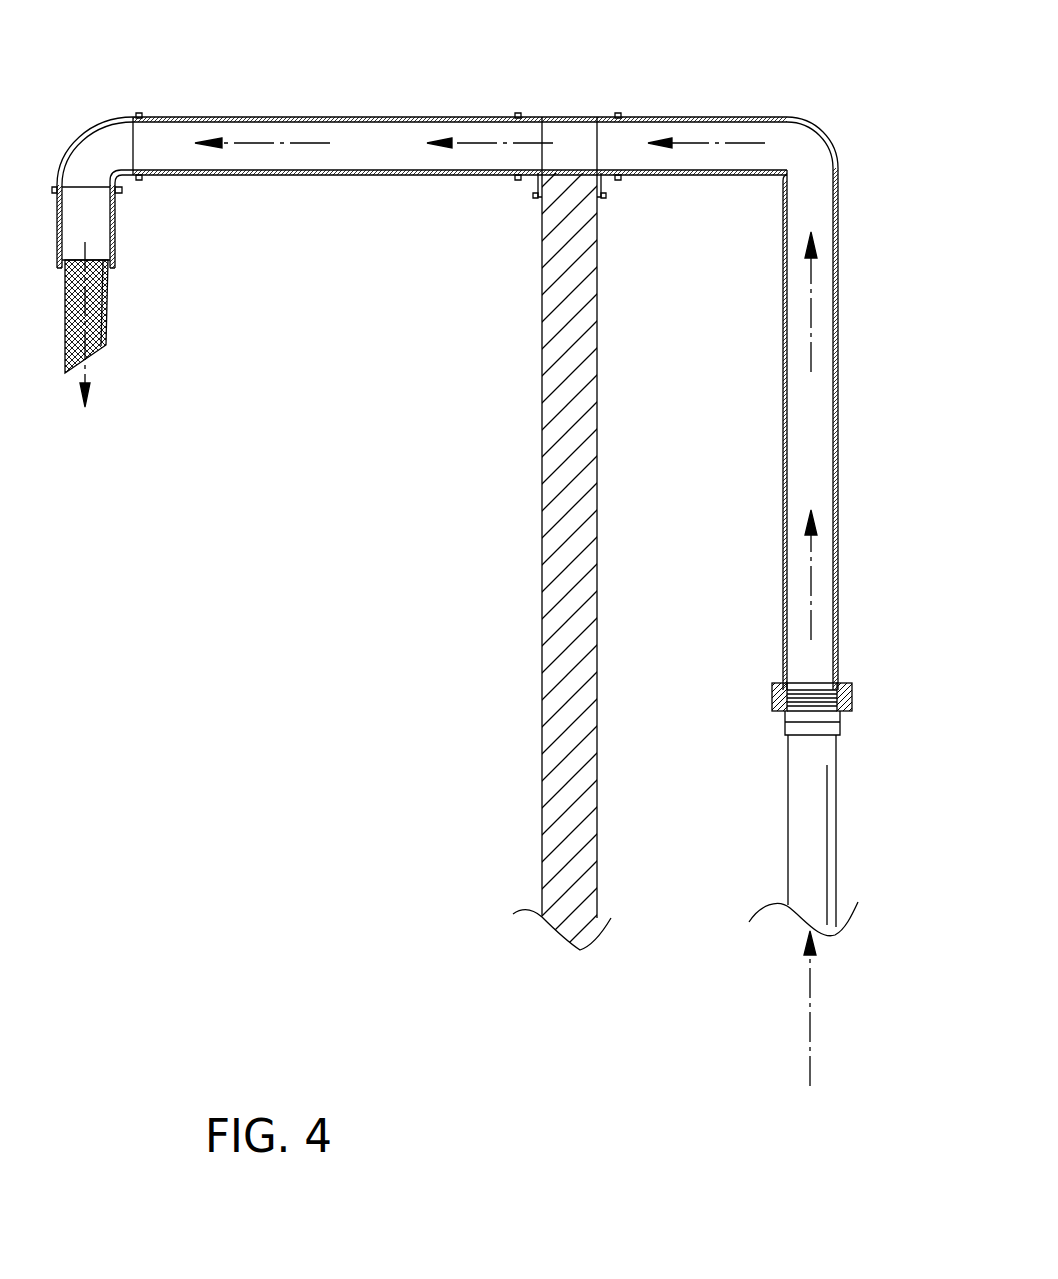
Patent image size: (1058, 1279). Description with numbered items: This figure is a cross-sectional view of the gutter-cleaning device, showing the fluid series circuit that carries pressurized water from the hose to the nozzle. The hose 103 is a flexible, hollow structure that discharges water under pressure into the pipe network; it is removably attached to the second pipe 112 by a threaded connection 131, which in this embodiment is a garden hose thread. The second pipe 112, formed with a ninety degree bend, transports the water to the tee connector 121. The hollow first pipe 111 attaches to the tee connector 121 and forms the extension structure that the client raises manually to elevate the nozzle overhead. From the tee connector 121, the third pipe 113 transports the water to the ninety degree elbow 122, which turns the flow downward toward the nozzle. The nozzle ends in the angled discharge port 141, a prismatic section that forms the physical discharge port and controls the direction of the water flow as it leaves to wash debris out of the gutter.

The hose 103 is at (808, 840).
The first pipe 111 is at (580, 548).
The second pipe 112 is at (811, 372).
The third pipe 113 is at (358, 142).
The tee connector 121 is at (558, 117).
The 90 degree elbow 122 is at (100, 143).
The threaded connection 131 is at (815, 695).
The angled discharge port 141 is at (108, 318).